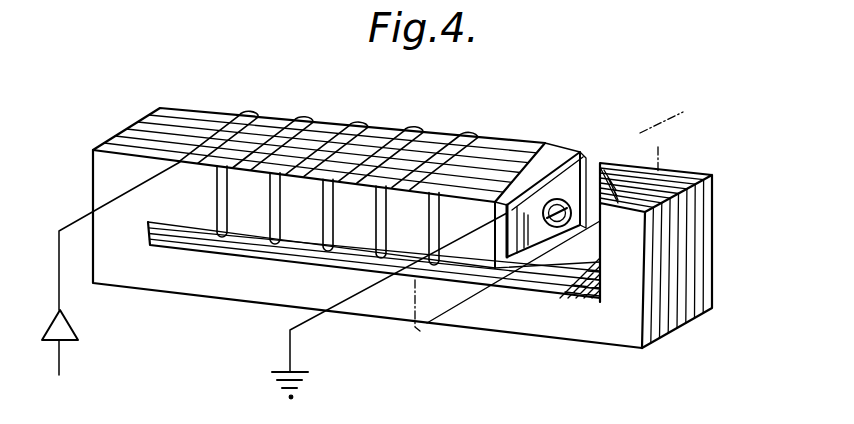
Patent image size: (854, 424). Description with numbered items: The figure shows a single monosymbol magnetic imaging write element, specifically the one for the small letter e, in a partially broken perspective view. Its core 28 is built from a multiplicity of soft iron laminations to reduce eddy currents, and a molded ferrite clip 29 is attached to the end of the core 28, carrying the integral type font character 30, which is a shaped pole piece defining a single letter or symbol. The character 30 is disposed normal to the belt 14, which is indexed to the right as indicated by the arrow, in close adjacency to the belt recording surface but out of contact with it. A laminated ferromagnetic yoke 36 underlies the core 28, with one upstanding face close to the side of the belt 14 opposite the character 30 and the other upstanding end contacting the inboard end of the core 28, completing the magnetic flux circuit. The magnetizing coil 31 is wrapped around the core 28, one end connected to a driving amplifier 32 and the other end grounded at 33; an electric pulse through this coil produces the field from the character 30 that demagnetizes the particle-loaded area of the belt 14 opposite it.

The belt 14 is at (663, 152).
The core 28 is at (190, 207).
The molded ferrite clip 29 is at (573, 152).
The type font character 30 is at (588, 160).
The magnetizing coil 31 is at (304, 124).
The driving amplifier 32 is at (78, 327).
The ground 33 is at (277, 382).
The laminated ferromagnetic yoke 36 is at (695, 238).